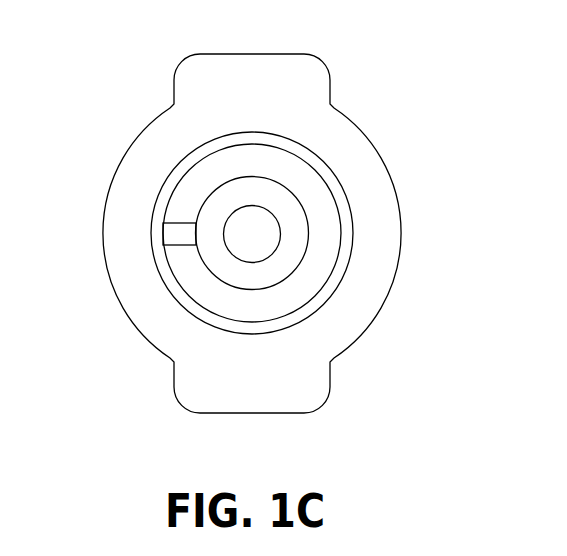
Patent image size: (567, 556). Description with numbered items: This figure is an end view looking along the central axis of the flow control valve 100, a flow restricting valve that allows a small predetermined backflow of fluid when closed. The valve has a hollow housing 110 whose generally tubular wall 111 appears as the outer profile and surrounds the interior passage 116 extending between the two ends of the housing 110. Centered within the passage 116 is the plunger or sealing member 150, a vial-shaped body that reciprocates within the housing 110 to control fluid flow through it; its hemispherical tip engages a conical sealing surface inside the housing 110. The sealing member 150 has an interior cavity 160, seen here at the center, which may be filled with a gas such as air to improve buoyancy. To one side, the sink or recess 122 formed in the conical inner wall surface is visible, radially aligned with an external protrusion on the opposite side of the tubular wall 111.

The flow control valve 100 is at (540, 58).
The housing 110 is at (397, 278).
The tubular wall 111 is at (377, 210).
The interior passage 116 is at (202, 187).
The sink or recess 122 is at (180, 232).
The sealing member 150 is at (278, 264).
The interior cavity 160 is at (253, 232).